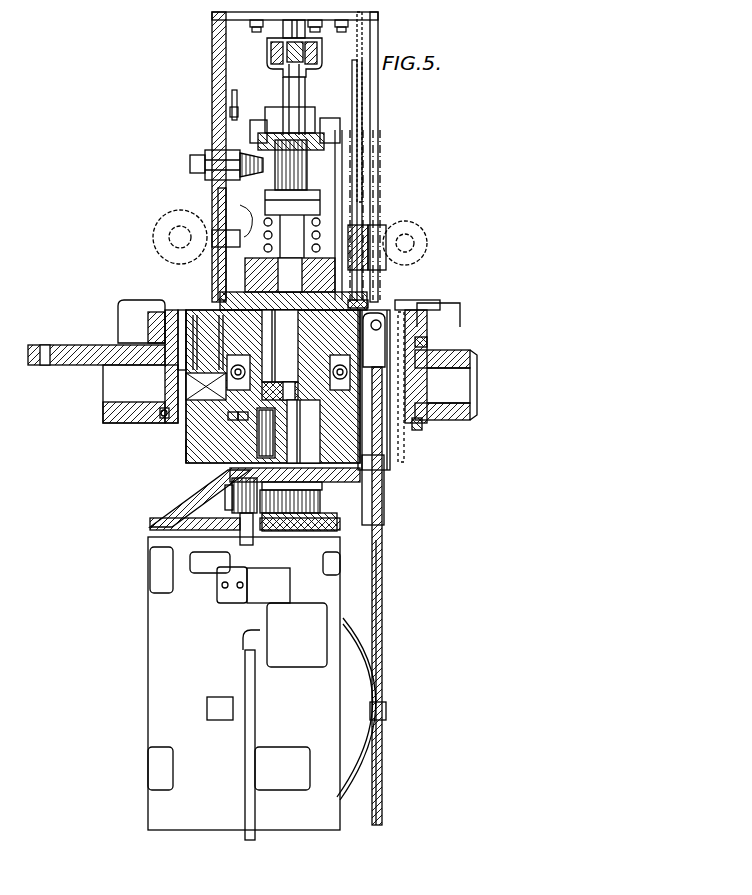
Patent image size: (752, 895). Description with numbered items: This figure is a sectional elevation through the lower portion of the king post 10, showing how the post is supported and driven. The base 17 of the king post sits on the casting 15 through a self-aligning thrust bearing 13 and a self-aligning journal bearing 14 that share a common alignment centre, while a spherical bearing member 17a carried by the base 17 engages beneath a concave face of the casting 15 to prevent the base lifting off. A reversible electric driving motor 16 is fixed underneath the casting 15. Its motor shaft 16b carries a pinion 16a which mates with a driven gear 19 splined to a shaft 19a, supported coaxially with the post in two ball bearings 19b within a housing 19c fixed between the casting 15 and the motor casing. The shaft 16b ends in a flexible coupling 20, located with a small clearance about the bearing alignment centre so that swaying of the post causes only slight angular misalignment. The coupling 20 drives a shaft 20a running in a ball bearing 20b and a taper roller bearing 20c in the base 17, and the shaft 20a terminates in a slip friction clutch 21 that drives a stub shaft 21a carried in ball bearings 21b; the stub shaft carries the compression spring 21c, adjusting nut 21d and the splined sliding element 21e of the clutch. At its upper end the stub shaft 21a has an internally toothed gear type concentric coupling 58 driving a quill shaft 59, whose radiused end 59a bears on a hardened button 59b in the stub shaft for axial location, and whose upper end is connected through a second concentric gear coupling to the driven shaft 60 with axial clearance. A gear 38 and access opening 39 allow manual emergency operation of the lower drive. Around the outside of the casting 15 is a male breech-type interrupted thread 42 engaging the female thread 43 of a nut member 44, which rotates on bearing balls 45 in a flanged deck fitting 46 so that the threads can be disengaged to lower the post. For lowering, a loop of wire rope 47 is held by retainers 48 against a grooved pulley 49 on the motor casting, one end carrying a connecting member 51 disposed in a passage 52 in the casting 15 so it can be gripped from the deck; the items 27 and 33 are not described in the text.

The king post 10 is at (222, 70).
The self-aligning thrust bearing 13 is at (345, 368).
The self-aligning journal bearing 14 is at (242, 418).
The casting 15 is at (233, 414).
The reversible electric driving motor 16 is at (172, 637).
The pinion 16a is at (233, 490).
The motor shaft 16b is at (243, 522).
The base 17 is at (212, 312).
The spherical bearing member 17a is at (186, 447).
The driven gear 19 is at (287, 503).
The shaft 19a is at (313, 503).
The ball bearings 19b is at (310, 486).
The housing 19c is at (232, 498).
The flexible coupling 20 is at (372, 470).
The shaft 20a is at (430, 346).
The ball bearing 20b is at (335, 393).
The taper roller bearing 20c is at (418, 328).
The slip friction coupling or clutch 21 is at (340, 272).
The stub shaft 21a is at (210, 152).
The ball bearings 21b is at (342, 128).
The compression spring 21c is at (325, 232).
The adjusting nut 21d is at (262, 208).
The sliding element 21e is at (250, 268).
The feed screw 27 is at (385, 162).
The nut block 33 is at (380, 237).
The gear 38 is at (358, 150).
The access opening 39 is at (200, 170).
The male breech-type interrupted thread 42 is at (158, 398).
The female breech-type interrupted thread 43 is at (160, 384).
The nut member 44 is at (137, 320).
The bearing balls 45 is at (160, 414).
The flanged deck fitting 46 is at (92, 357).
The wire rope 47 is at (379, 752).
The retainers 48 is at (388, 710).
The grooved pulley 49 is at (367, 767).
The connecting member 51 is at (385, 405).
The passage 52 is at (402, 306).
The internally toothed gear type concentric coupling 58 is at (322, 115).
The quill shaft 59 is at (305, 96).
The radiused end 59a is at (287, 45).
The hardened button 59b is at (248, 130).
The driven shaft 60 is at (292, 22).